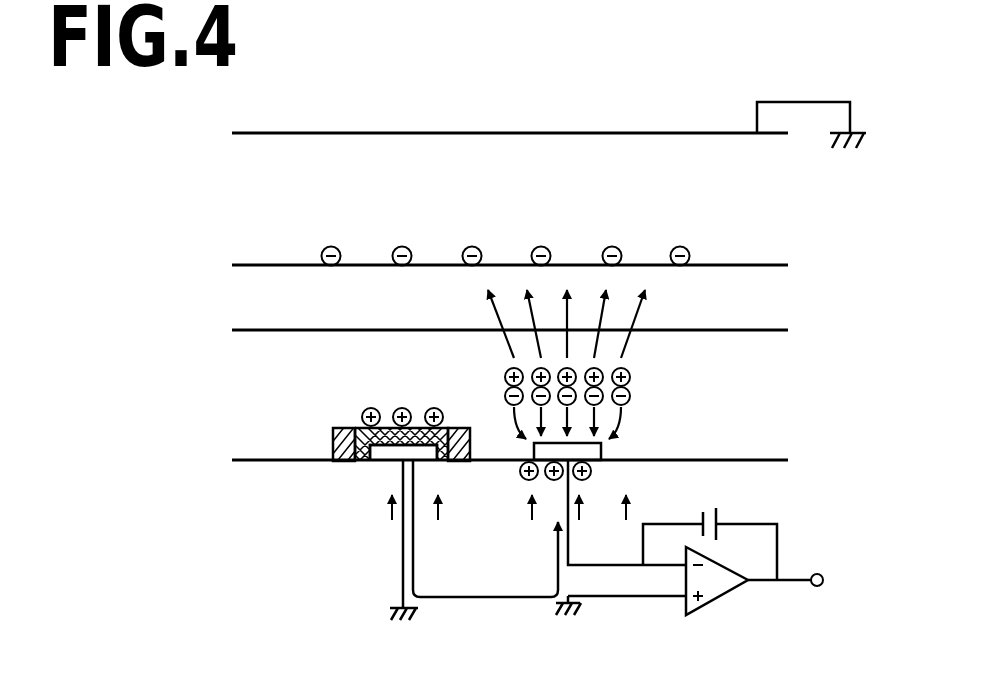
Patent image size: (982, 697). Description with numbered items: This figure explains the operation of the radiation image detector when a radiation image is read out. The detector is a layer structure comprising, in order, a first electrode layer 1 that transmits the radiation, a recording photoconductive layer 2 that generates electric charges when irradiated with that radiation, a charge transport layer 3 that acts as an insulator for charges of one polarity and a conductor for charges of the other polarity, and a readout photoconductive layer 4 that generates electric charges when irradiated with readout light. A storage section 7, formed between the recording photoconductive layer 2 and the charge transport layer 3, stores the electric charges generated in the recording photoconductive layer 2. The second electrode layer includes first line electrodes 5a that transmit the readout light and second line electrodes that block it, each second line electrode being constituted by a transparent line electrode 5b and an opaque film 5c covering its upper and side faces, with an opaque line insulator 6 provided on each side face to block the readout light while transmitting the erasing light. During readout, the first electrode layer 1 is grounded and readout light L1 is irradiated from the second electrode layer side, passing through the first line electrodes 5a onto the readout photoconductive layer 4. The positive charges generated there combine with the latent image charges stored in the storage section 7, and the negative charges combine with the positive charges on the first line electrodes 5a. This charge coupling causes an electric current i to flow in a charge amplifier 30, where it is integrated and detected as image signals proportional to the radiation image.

The first electrode layer 1 is at (236, 133).
The recording photoconductive layer 2 is at (243, 181).
The storage section 7 is at (266, 263).
The charge transport layer 3 is at (243, 296).
The readout photoconductive layer 4 is at (243, 355).
The first line electrode 5a is at (597, 449).
The transparent line electrode 5b is at (386, 462).
The opaque film 5c is at (358, 462).
The opaque line insulator 6 is at (342, 462).
The readout light L1 is at (392, 523).
The induced current i is at (485, 546).
The charge amplifier 30 is at (728, 606).